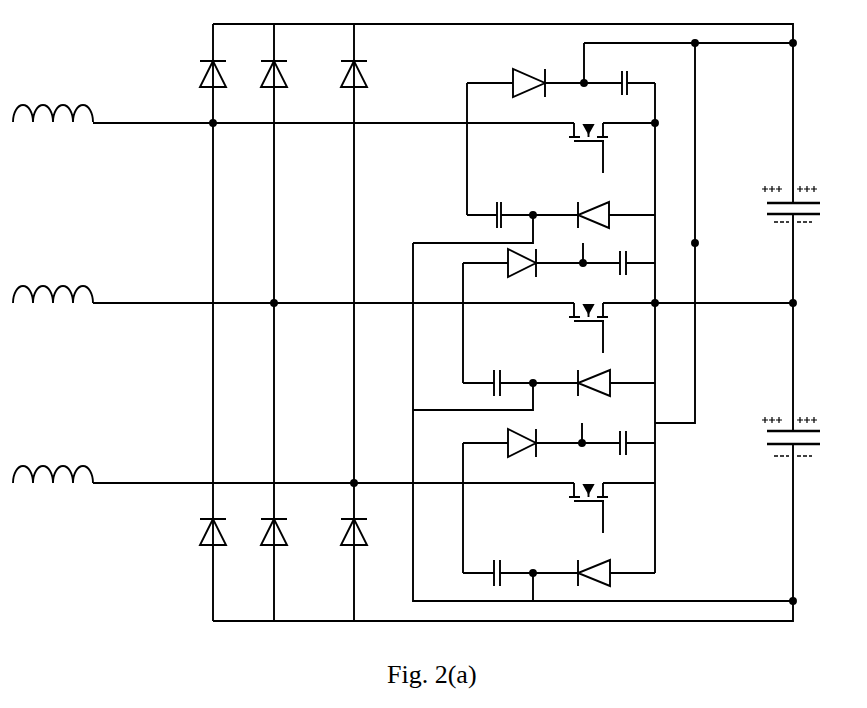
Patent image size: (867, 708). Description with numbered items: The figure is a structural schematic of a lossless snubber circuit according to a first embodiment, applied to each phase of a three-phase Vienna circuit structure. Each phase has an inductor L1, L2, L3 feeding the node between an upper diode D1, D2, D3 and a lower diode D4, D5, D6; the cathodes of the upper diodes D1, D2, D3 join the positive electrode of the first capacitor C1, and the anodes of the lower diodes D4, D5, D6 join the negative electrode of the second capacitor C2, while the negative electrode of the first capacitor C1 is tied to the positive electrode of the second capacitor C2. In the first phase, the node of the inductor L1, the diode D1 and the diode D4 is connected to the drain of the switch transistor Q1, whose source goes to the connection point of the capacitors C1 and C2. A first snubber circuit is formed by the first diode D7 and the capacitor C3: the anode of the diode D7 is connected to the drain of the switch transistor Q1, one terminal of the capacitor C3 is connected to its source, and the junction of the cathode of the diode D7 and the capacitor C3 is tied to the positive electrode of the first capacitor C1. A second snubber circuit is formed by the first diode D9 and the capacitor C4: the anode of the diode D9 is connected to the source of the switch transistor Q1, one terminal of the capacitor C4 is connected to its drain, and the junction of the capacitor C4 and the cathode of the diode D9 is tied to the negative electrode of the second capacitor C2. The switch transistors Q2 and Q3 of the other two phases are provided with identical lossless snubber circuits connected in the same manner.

The inductor L1 is at (53, 101).
The inductor L2 is at (53, 282).
The inductor L3 is at (53, 461).
The diode D1 is at (226, 74).
The diode D2 is at (287, 74).
The diode D3 is at (367, 74).
The diode D4 is at (226, 532).
The diode D5 is at (287, 532).
The diode D6 is at (367, 532).
The first diode of the first snubber circuit D7 is at (529, 95).
The first diode of the second snubber circuit D9 is at (593, 202).
The capacitor of the first snubber circuit C3 is at (625, 71).
The capacitor of the second snubber circuit C4 is at (499, 202).
The switch transistor Q1 is at (612, 148).
The switch transistor Q2 is at (612, 328).
The switch transistor Q3 is at (612, 508).
The first capacitor C1 is at (804, 204).
The second capacitor C2 is at (805, 436).